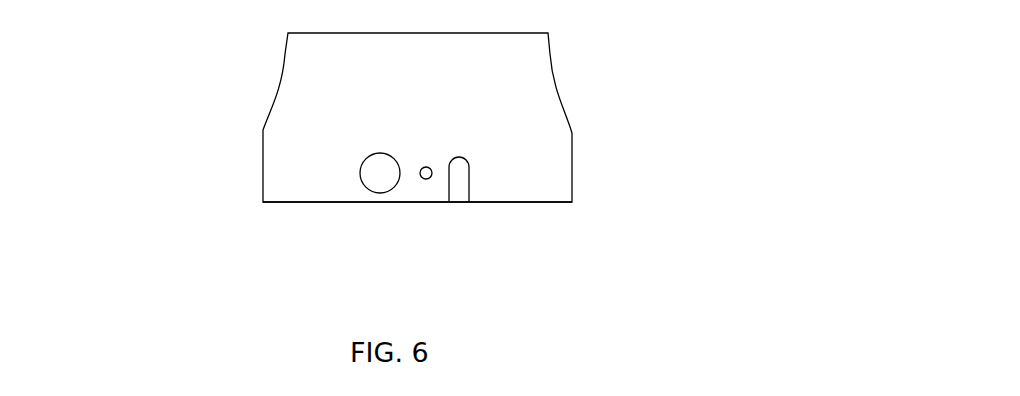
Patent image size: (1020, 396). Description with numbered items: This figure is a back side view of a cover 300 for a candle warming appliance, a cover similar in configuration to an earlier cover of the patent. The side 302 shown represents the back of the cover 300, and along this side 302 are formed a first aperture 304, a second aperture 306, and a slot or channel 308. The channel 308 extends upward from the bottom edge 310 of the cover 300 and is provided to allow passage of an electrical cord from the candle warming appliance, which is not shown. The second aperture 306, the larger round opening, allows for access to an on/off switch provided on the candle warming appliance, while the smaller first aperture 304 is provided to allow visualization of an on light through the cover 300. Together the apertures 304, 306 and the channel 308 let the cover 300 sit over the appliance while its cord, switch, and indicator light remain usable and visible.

The cover 300 is at (619, 80).
The side 302 is at (446, 121).
The first aperture 304 is at (426, 179).
The second aperture 306 is at (367, 172).
The slot or channel 308 is at (464, 175).
The bottom edge 310 is at (282, 202).